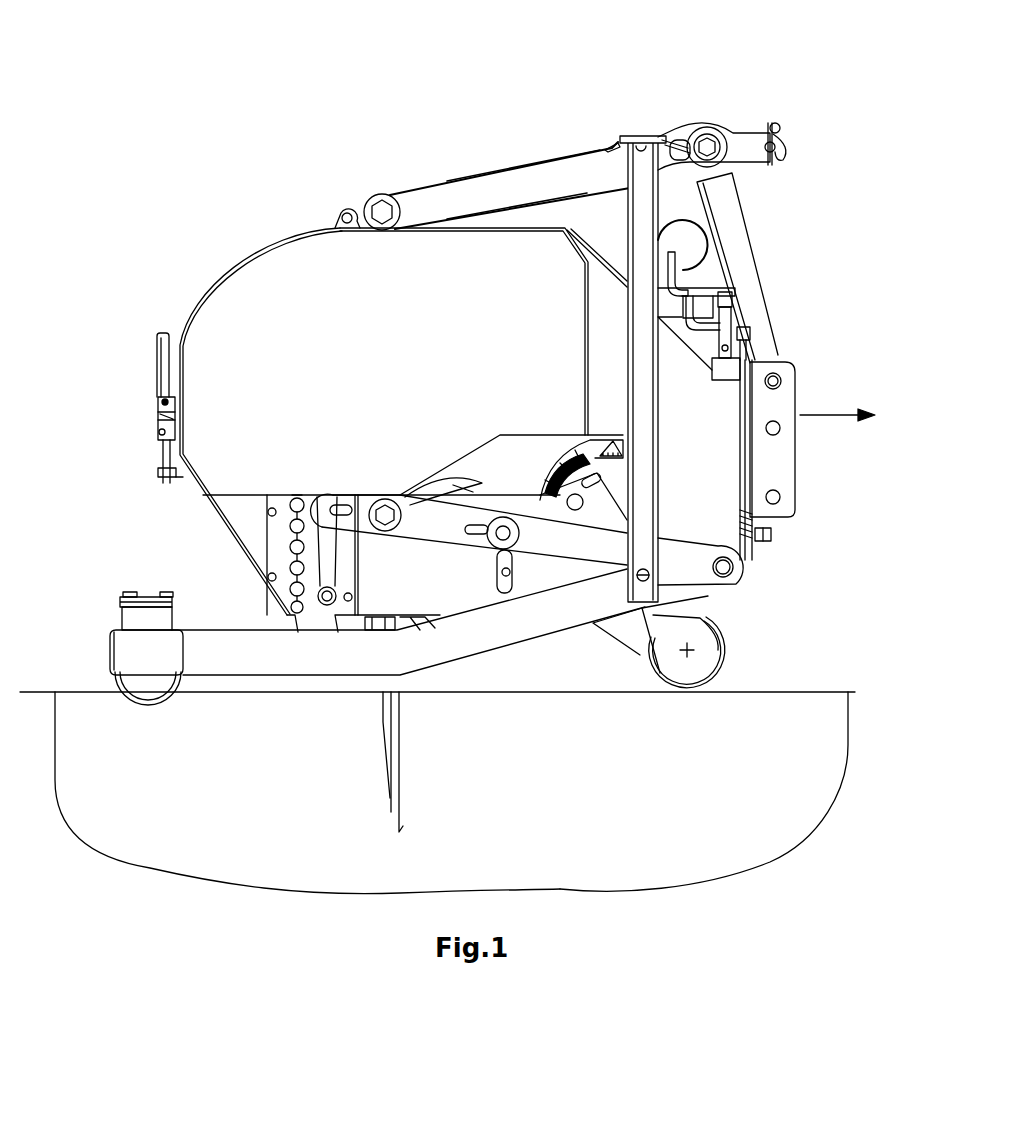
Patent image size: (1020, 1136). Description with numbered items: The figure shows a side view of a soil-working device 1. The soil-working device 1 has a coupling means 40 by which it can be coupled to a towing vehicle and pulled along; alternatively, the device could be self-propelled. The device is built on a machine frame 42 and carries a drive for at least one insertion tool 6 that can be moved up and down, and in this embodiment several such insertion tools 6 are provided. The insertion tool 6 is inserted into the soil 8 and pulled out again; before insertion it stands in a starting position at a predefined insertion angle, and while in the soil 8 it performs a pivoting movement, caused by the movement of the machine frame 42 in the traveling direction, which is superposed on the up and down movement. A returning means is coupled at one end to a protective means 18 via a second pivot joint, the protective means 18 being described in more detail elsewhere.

The soil-working device 1 is at (492, 358).
The insertion tool 6 is at (360, 761).
The soil 8 is at (823, 720).
The protective means 18 is at (744, 552).
The coupling means 40 is at (783, 145).
The machine frame 42 is at (773, 533).